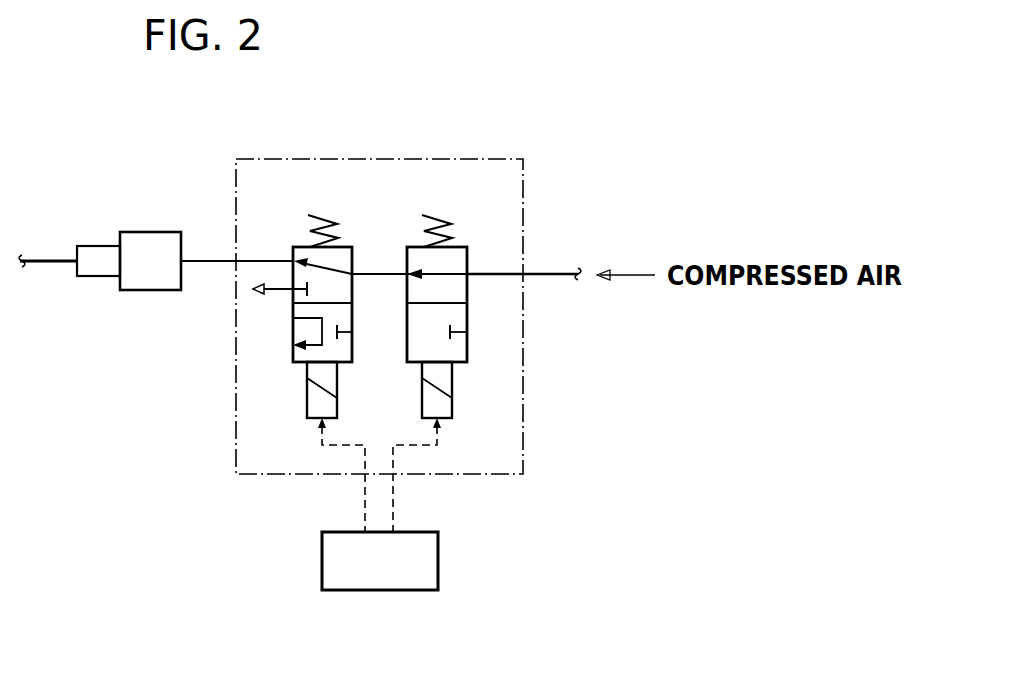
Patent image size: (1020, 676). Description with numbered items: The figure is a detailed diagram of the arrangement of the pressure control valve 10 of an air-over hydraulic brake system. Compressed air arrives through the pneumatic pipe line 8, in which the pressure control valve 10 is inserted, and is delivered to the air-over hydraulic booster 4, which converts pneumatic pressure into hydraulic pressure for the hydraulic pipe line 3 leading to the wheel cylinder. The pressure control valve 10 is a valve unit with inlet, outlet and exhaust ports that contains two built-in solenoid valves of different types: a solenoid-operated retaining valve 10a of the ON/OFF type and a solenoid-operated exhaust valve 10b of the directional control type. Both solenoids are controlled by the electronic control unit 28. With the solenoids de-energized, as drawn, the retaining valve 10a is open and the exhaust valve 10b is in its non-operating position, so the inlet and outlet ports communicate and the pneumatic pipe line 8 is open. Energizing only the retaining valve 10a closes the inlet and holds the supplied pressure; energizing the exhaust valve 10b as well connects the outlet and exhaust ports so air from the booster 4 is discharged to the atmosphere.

The hydraulic pipe line 3 is at (51, 258).
The air-over hydraulic booster 4 is at (150, 232).
The pneumatic pipe line 8 is at (549, 272).
The pressure control valve 10 is at (438, 159).
The retaining valve 10a is at (455, 247).
The exhaust valve 10b is at (301, 247).
The electronic control unit 28 is at (438, 546).